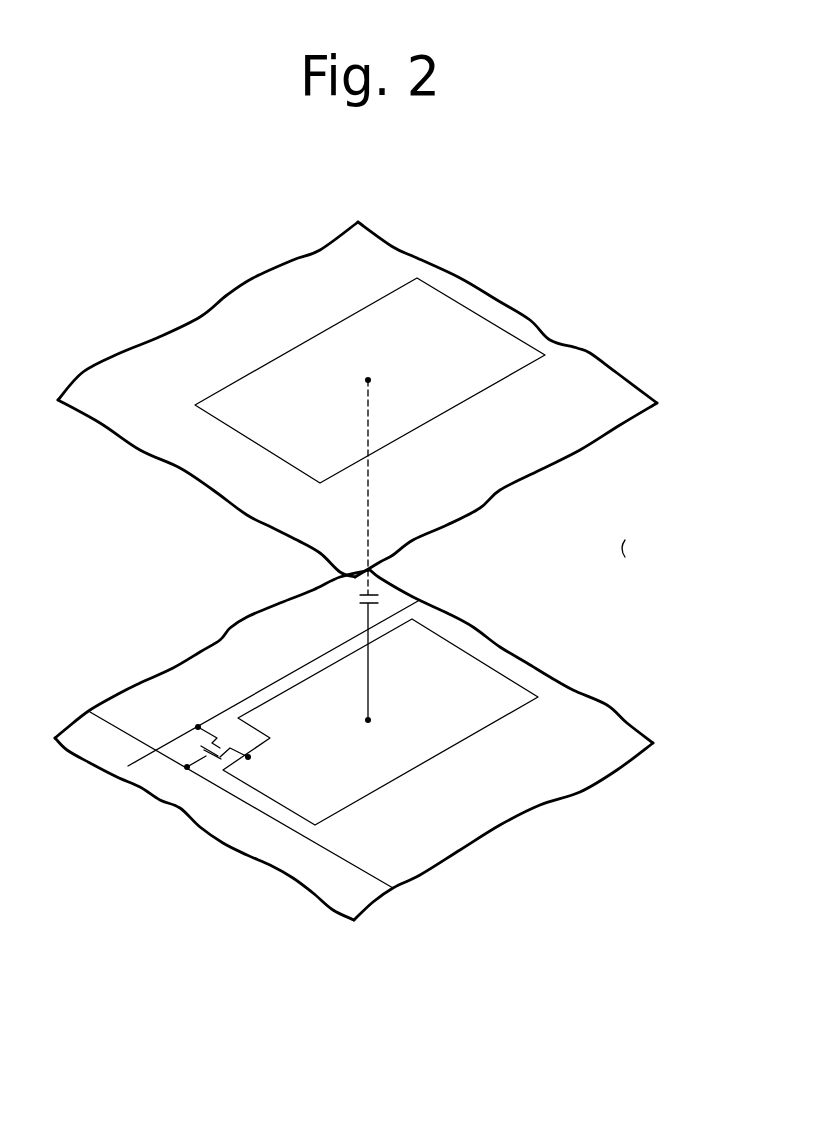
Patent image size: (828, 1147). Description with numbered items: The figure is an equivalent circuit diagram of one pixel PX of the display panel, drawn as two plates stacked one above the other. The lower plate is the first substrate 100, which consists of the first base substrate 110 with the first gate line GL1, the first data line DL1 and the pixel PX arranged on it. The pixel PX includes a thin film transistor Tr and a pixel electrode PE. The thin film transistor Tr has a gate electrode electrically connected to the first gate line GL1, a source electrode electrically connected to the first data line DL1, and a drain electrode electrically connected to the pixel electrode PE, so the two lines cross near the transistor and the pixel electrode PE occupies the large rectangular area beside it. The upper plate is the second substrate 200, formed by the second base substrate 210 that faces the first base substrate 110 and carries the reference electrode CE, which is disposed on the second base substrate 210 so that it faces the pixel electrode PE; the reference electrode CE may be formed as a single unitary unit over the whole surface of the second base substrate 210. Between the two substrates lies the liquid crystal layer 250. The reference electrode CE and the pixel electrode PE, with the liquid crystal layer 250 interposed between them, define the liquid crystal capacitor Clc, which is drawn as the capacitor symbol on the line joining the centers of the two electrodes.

The second substrate 200 is at (357, 389).
The second base substrate 210 is at (395, 256).
The reference electrode CE is at (438, 314).
The liquid crystal layer 250 is at (624, 548).
The first substrate 100 is at (354, 747).
The first base substrate 110 is at (605, 718).
The pixel PX is at (297, 752).
The first data line DL1 is at (273, 682).
The first gate line GL1 is at (127, 728).
The pixel electrode PE is at (265, 795).
The liquid crystal capacitor Clc is at (350, 651).
The thin film transistor Tr is at (213, 762).